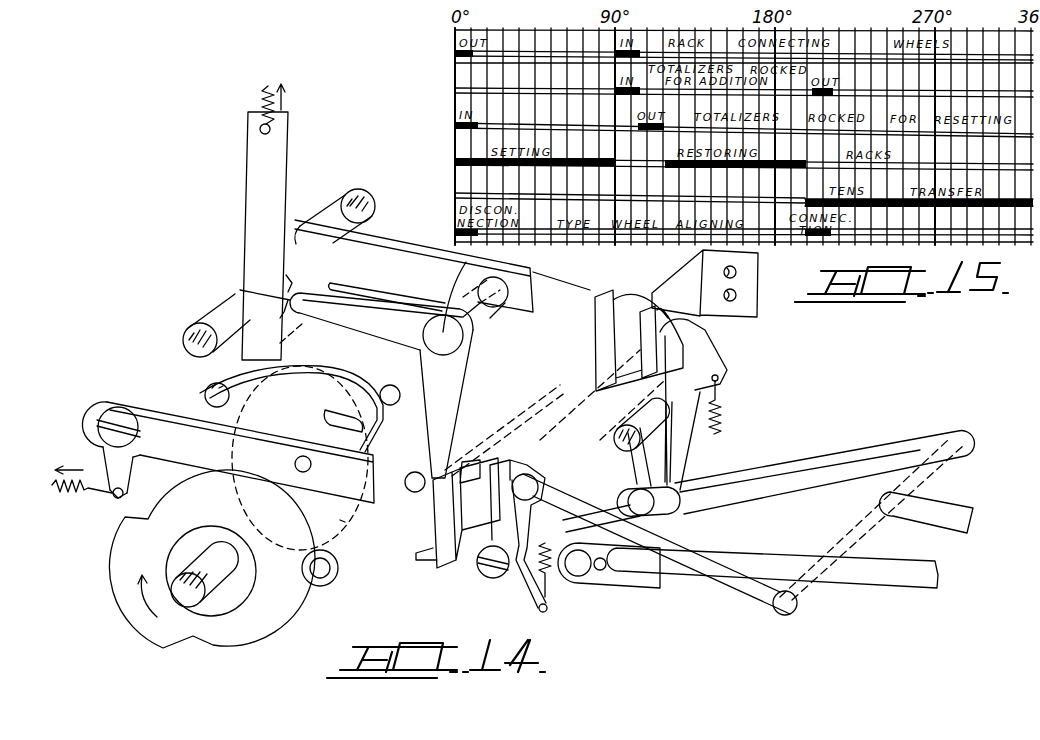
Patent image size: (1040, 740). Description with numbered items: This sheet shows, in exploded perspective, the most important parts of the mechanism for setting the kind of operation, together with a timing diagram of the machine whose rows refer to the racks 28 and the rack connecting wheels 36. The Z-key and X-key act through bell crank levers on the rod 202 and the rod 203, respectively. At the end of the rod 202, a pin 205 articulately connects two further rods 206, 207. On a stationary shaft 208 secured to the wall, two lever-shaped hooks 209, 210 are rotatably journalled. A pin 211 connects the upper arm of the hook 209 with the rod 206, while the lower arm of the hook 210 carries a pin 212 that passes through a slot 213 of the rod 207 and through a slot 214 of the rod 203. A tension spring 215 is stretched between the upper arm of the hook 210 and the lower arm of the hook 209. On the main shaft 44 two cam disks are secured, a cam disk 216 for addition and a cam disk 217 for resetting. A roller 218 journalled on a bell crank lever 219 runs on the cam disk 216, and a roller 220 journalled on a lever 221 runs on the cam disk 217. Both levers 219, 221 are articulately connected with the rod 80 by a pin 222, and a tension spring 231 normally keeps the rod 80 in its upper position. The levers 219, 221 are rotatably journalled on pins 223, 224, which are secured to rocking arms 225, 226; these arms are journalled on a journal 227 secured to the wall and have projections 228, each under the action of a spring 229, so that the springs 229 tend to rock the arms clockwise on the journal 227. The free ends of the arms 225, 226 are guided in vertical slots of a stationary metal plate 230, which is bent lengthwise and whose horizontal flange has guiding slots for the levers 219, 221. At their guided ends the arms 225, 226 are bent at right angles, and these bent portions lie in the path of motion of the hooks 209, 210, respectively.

In FIG. 14, the main shaft 44 is at (213, 590).
In FIG. 14, the rod 80 is at (252, 152).
In FIG. 14, the rod 202 is at (957, 510).
In FIG. 14, the rod 203 is at (867, 582).
In FIG. 14, the pin 205 is at (783, 613).
In FIG. 14, the rod 206 is at (753, 597).
In FIG. 14, the rod 207 is at (863, 455).
In FIG. 14, the stationary shaft 208 is at (480, 571).
In FIG. 14, the lever-shaped hook 209 is at (513, 590).
In FIG. 14, the lever-shaped hook 210 is at (703, 353).
In FIG. 14, the pin 211 is at (523, 465).
In FIG. 14, the pin 212 is at (595, 580).
In FIG. 14, the slot 213 is at (680, 480).
In FIG. 14, the slot 214 is at (657, 577).
In FIG. 14, the tension spring 215 is at (722, 415).
In FIG. 14, the cam disk 216 is at (278, 604).
In FIG. 14, the cam disk 217 is at (352, 378).
In FIG. 14, the roller 218 is at (338, 570).
In FIG. 14, the bell crank lever 219 is at (300, 397).
In FIG. 14, the roller 220 is at (460, 455).
In FIG. 14, the lever 221 is at (466, 372).
In FIG. 14, the pin 222 is at (143, 387).
In FIG. 14, the pin 223 is at (311, 467).
In FIG. 14, the pin 224 is at (465, 341).
In FIG. 14, the rocking arm 225 is at (197, 460).
In FIG. 14, the rocking arm 226 is at (390, 248).
In FIG. 14, the journal 227 is at (373, 212).
In FIG. 14, the projection 228 is at (292, 283).
In FIG. 14, the spring 229 is at (287, 310).
In FIG. 14, the stationary metal plate 230 is at (693, 268).
In FIG. 14, the tension spring 231 is at (262, 91).
In FIG. 15, the racks 28 is at (967, 156).
In FIG. 15, the rack connecting wheels 36 is at (1002, 45).